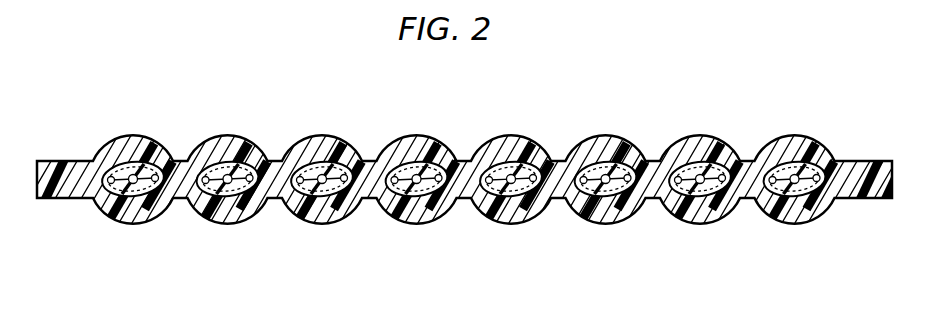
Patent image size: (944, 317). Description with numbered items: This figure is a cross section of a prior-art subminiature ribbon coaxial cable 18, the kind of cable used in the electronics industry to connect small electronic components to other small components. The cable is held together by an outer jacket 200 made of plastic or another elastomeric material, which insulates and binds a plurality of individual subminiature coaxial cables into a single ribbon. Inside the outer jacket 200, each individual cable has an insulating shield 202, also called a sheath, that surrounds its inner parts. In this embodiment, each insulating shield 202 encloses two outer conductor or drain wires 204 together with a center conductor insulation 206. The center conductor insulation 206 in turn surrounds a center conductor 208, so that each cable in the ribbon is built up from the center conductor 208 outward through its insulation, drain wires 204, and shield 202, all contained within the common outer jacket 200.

The subminiature ribbon coaxial cable 18 is at (566, 100).
The outer jacket 200 is at (66, 161).
The insulating shield 202 is at (132, 140).
The outer conductor wires 204 is at (121, 198).
The center conductor insulation 206 is at (228, 210).
The center conductor 208 is at (230, 140).